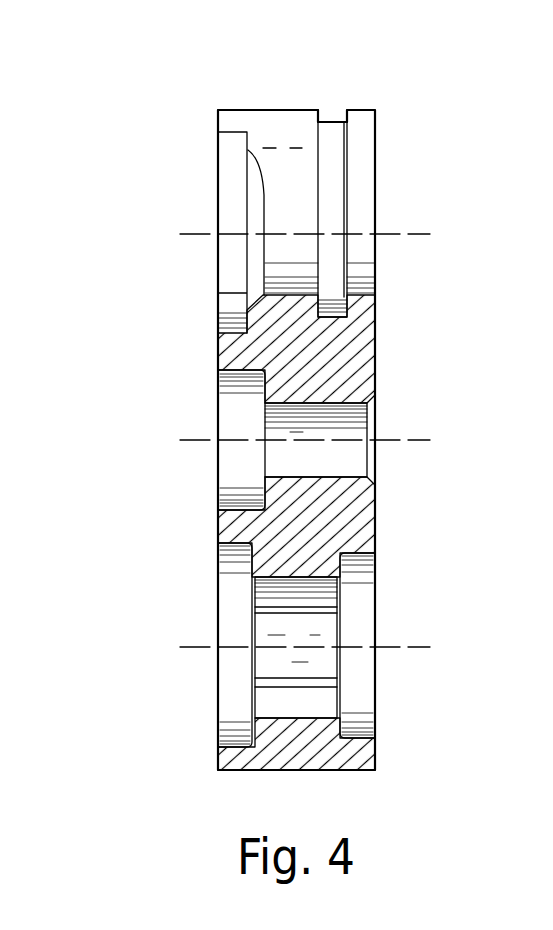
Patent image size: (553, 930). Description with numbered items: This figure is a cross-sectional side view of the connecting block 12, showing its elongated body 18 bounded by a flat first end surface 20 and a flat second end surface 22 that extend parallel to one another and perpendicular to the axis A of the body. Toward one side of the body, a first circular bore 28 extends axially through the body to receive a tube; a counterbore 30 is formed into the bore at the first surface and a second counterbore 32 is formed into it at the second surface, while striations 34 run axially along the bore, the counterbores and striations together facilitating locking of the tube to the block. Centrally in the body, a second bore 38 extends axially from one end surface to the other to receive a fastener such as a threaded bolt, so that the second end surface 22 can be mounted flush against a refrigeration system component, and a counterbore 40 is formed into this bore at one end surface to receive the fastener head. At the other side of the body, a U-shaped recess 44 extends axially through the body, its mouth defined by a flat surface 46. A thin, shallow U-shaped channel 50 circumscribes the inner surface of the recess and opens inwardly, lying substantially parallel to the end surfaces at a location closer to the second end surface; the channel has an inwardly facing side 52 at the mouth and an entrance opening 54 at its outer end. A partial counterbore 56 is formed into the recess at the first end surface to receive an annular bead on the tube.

The connecting block 12 is at (171, 367).
The body 18 is at (218, 533).
The first end surface 20 is at (218, 750).
The second end surface 22 is at (375, 747).
The first circular bore 28 is at (258, 674).
The counterbore 30 is at (228, 583).
The second counterbore 32 is at (363, 573).
The striations 34 is at (315, 618).
The second bore 38 is at (275, 458).
The counterbore 40 is at (237, 423).
The U-shaped recess 44 is at (238, 86).
The flat surface 46 is at (287, 122).
The U-shaped channel 50 is at (347, 272).
The channel side 52 is at (333, 162).
The entrance opening 54 is at (330, 122).
The partial counterbore 56 is at (232, 147).
The axis A is at (412, 440).